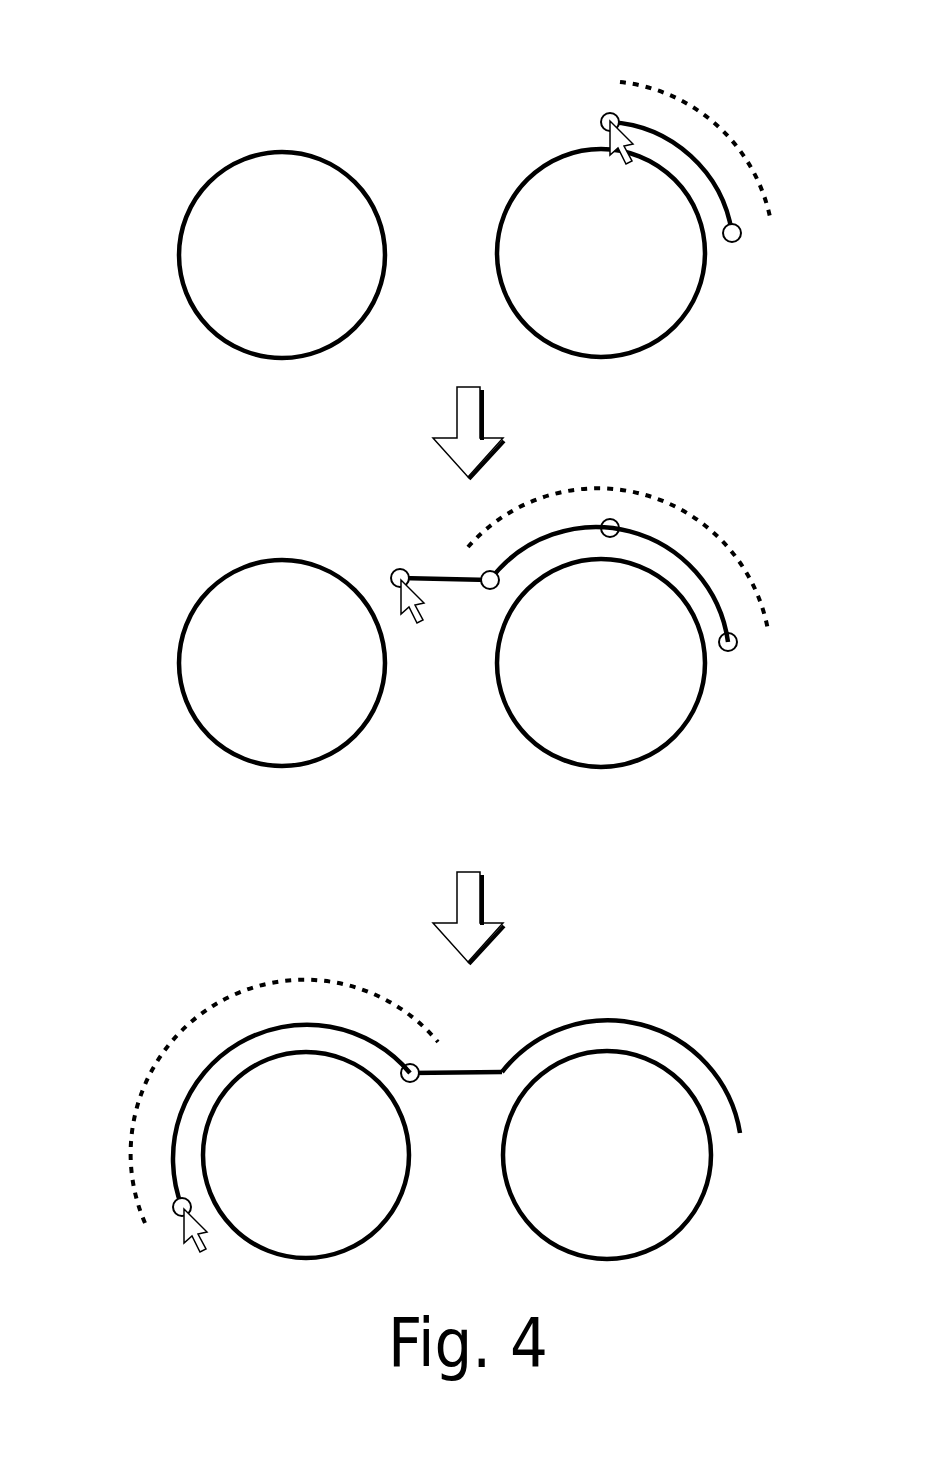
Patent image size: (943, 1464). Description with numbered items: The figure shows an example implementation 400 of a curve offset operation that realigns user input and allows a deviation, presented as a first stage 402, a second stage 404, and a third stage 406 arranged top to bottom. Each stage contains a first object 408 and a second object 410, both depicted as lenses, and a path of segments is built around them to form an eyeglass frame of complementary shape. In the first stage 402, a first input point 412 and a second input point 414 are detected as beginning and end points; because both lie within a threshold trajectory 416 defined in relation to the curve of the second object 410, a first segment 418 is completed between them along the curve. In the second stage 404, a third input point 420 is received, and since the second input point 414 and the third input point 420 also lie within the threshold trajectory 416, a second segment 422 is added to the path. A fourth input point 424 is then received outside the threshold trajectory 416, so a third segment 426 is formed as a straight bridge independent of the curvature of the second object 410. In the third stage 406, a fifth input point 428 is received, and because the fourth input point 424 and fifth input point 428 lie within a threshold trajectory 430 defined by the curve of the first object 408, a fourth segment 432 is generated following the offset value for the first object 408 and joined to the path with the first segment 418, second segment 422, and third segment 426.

The example implementation 400 is at (156, 70).
The first stage 402 is at (187, 146).
The second stage 404 is at (186, 548).
The third stage 406 is at (186, 946).
The first object 408 is at (178, 248).
The second object 410 is at (598, 358).
The first input point 412 is at (737, 242).
The second input point 414 is at (606, 116).
The threshold trajectory 416 is at (718, 125).
The first segment 418 is at (713, 175).
The third input point 420 is at (494, 590).
The second segment 422 is at (543, 535).
The fourth input point 424 is at (397, 569).
The third segment 426 is at (420, 582).
The fifth input point 428 is at (182, 1217).
The threshold trajectory 430 is at (178, 1035).
The fourth segment 432 is at (260, 1025).